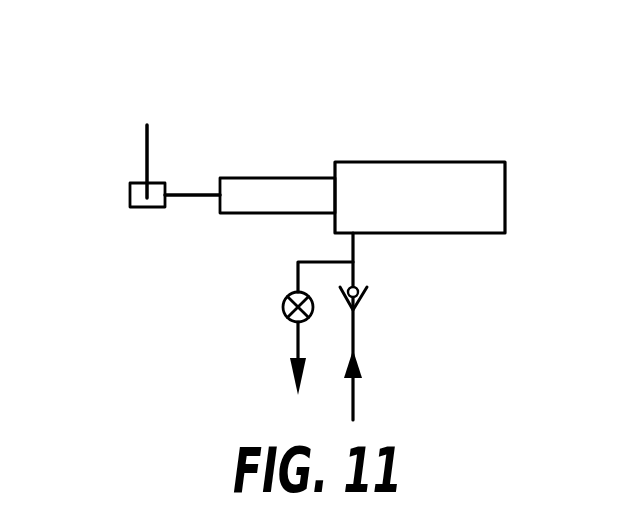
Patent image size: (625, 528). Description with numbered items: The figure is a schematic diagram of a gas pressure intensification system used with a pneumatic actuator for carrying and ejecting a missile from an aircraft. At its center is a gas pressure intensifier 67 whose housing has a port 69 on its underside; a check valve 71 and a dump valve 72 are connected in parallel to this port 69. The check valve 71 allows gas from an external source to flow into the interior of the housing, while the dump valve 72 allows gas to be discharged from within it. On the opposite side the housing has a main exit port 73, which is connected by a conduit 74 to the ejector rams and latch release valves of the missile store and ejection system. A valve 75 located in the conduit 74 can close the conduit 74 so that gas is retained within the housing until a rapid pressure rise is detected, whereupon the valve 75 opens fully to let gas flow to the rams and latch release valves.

The gas pressure intensifier 67 is at (405, 140).
The port 69 is at (355, 234).
The check valve 71 is at (363, 297).
The dump valve 72 is at (283, 307).
The main exit port 73 is at (218, 191).
The conduit 74 is at (146, 150).
The valve 75 is at (149, 208).